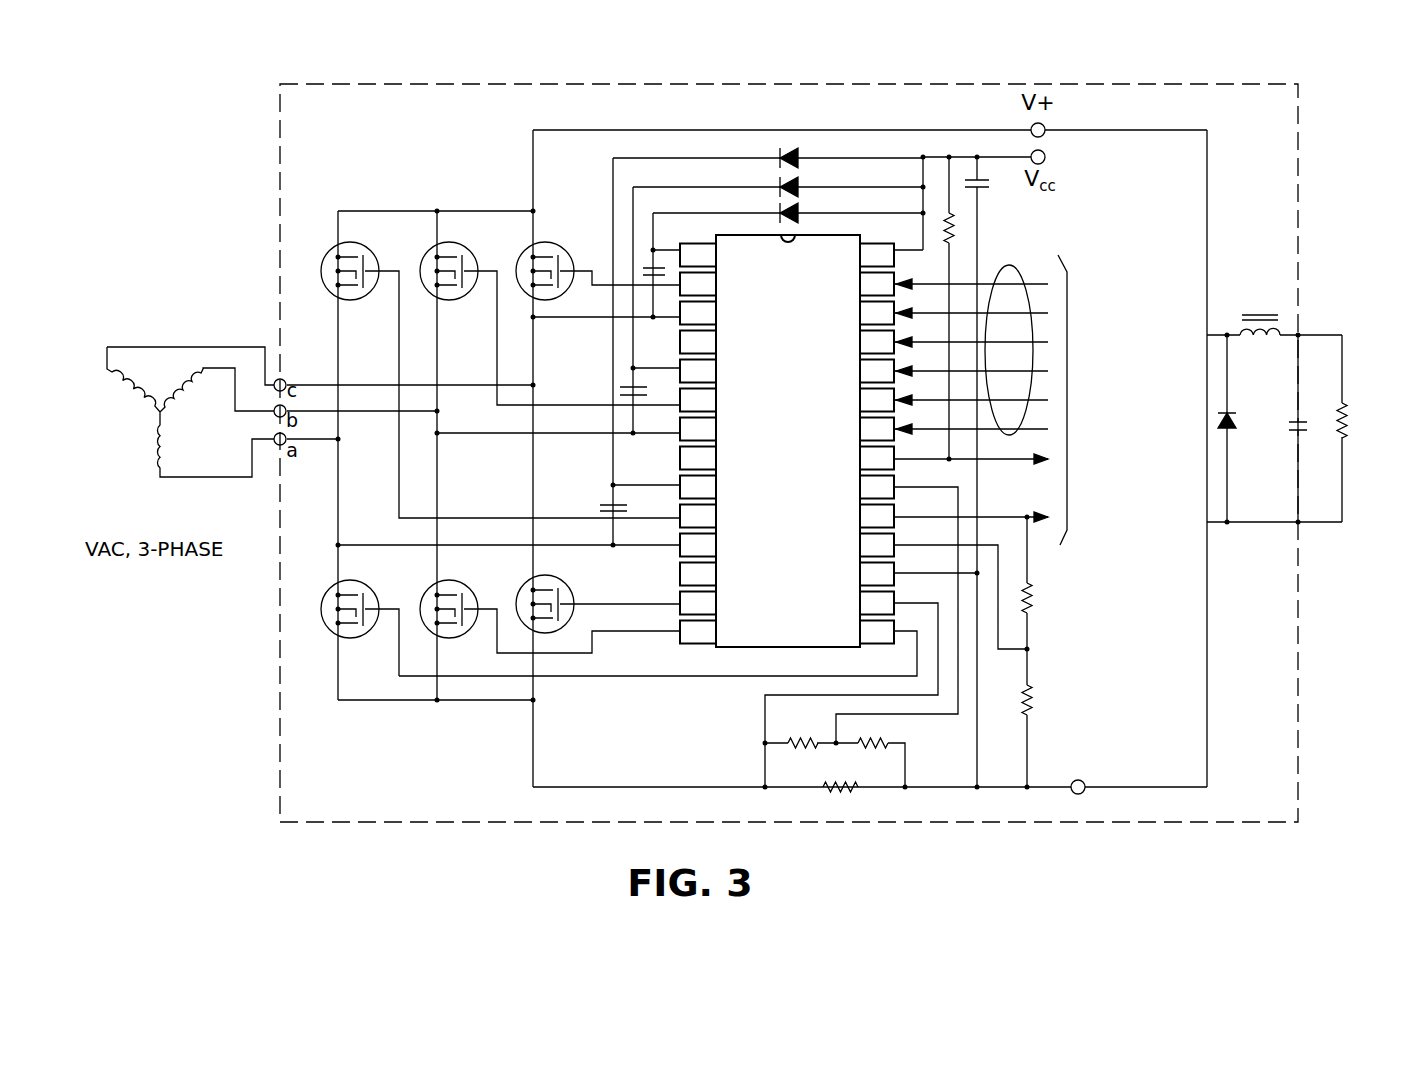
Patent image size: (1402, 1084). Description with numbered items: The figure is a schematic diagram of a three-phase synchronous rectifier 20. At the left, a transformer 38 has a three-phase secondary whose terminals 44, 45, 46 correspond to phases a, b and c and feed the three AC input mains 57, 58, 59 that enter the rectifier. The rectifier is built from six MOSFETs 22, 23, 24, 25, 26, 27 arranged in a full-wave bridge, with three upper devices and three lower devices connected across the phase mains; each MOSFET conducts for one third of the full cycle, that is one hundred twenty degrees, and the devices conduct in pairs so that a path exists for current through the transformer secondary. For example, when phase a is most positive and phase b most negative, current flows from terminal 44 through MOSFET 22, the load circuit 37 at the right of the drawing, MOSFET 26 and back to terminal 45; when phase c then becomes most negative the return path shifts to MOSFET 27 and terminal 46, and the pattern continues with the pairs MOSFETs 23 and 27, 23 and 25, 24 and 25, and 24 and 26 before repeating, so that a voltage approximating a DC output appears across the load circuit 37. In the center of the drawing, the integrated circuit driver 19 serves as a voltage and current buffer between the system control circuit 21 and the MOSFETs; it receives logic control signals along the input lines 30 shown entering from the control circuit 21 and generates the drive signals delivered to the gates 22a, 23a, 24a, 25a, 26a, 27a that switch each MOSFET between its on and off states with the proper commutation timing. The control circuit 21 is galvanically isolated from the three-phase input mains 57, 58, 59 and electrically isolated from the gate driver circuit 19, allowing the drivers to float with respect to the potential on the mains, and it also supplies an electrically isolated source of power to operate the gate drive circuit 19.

The integrated circuit driver 19 is at (745, 656).
The three-phase rectifier 20 is at (1304, 123).
The control circuit 21 is at (1124, 400).
The MOSFET 22 is at (367, 250).
The gate 22a is at (369, 297).
The MOSFET 23 is at (465, 250).
The gate 23a is at (466, 297).
The MOSFET 24 is at (561, 249).
The gate 24a is at (565, 297).
The MOSFET 25 is at (363, 584).
The gate 25a is at (377, 630).
The MOSFET 26 is at (456, 584).
The gate 26a is at (475, 630).
The MOSFET 27 is at (559, 580).
The gate 27a is at (572, 600).
The input lines 30 is at (1009, 270).
The load circuit 37 is at (1313, 352).
The transformer 38 is at (160, 357).
The terminal 44 is at (281, 449).
The terminal 45 is at (268, 416).
The terminal 46 is at (278, 378).
The AC input main 57 is at (321, 442).
The AC input main 58 is at (325, 414).
The AC input main 59 is at (313, 382).